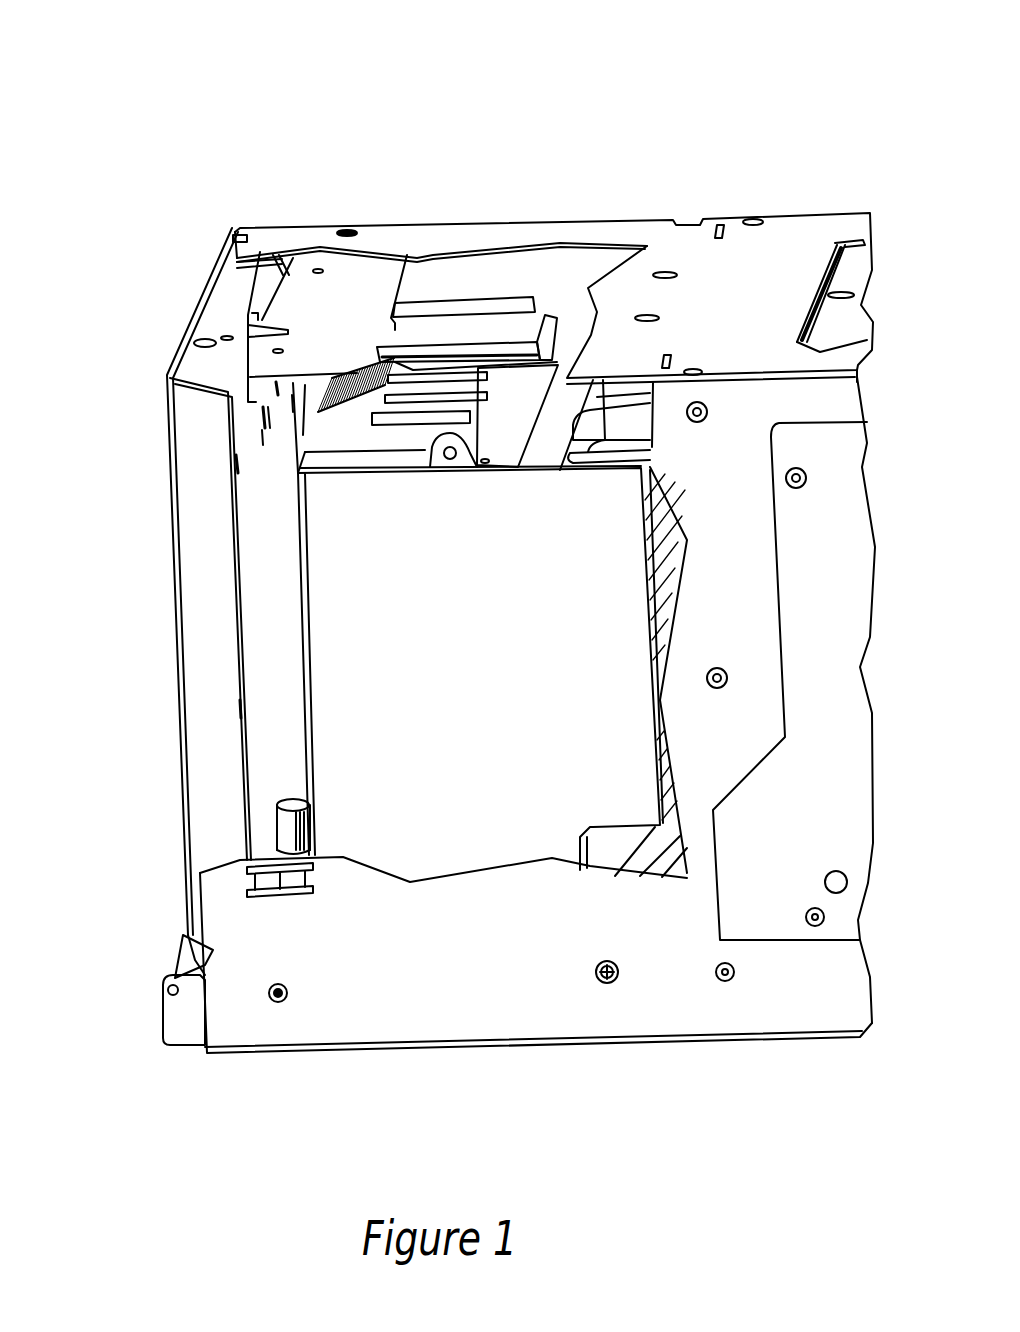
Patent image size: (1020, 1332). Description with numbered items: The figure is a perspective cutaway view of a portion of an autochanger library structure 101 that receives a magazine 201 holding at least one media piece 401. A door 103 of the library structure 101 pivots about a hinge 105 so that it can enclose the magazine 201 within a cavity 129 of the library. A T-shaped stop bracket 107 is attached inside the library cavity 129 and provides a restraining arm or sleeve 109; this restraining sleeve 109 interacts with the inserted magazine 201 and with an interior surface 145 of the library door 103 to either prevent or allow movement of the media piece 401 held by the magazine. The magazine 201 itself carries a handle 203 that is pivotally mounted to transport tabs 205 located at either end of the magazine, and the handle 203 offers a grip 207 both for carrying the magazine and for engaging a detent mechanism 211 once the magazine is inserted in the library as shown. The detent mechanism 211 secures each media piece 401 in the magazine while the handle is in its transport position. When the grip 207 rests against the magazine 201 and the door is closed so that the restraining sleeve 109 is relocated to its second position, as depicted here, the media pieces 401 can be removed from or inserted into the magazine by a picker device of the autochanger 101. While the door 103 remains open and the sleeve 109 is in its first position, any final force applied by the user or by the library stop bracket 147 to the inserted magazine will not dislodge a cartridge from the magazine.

The autochanger library structure 101 is at (782, 82).
The door 103 is at (178, 667).
The hinge 105 is at (178, 1013).
The stop bracket 107 is at (355, 266).
The restraining sleeve 109 is at (403, 355).
The cavity 129 is at (570, 277).
The interior surface 145 is at (262, 728).
The library stop bracket 147 is at (630, 853).
The magazine 201 is at (438, 773).
The handle 203 is at (365, 462).
The transport tabs 205 is at (436, 462).
The grip 207 is at (353, 338).
The detent mechanism 211 is at (530, 437).
The media piece 401 is at (656, 493).